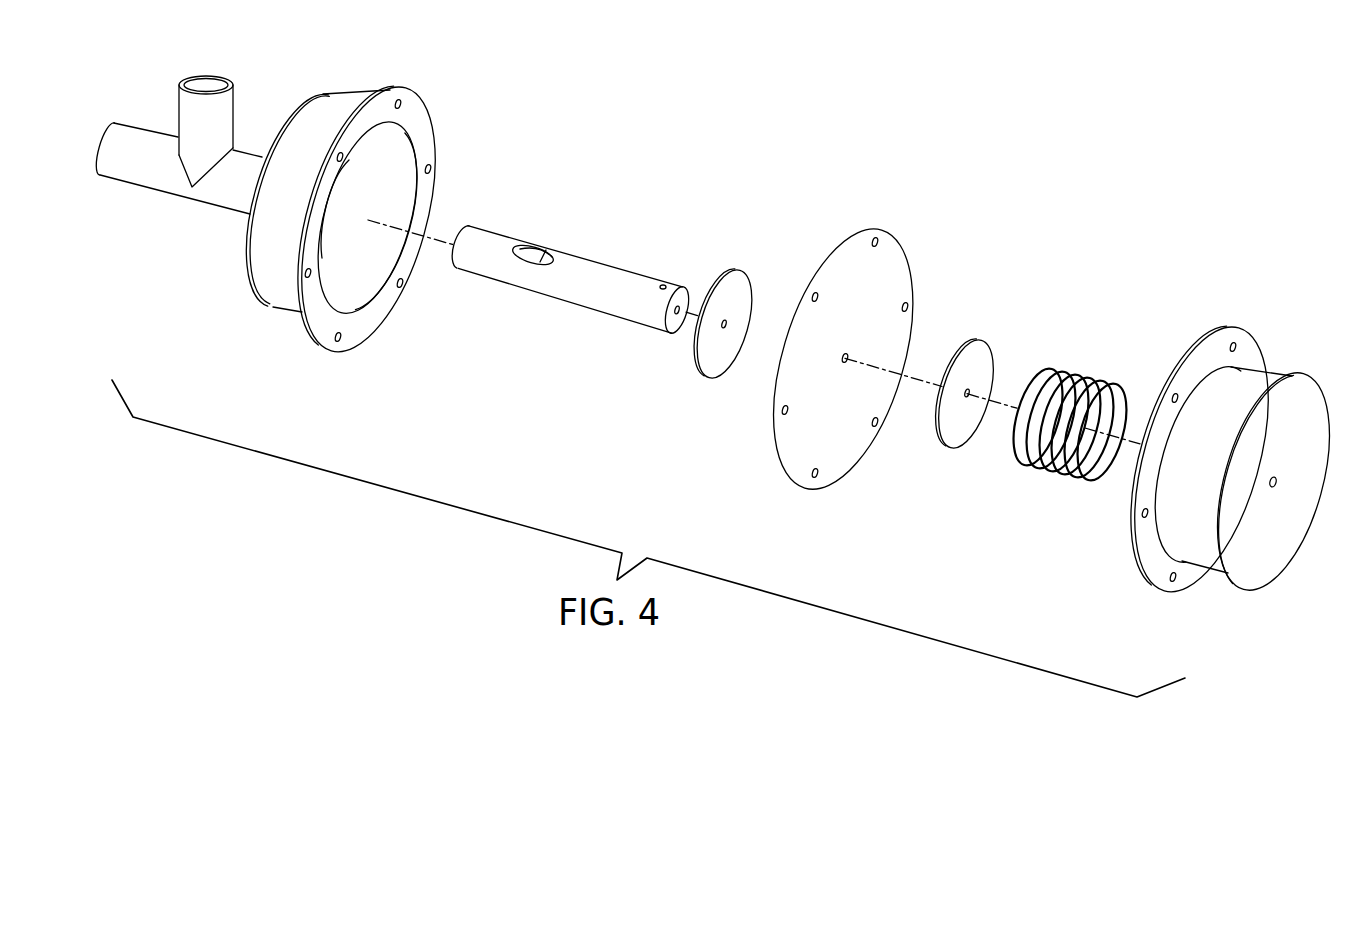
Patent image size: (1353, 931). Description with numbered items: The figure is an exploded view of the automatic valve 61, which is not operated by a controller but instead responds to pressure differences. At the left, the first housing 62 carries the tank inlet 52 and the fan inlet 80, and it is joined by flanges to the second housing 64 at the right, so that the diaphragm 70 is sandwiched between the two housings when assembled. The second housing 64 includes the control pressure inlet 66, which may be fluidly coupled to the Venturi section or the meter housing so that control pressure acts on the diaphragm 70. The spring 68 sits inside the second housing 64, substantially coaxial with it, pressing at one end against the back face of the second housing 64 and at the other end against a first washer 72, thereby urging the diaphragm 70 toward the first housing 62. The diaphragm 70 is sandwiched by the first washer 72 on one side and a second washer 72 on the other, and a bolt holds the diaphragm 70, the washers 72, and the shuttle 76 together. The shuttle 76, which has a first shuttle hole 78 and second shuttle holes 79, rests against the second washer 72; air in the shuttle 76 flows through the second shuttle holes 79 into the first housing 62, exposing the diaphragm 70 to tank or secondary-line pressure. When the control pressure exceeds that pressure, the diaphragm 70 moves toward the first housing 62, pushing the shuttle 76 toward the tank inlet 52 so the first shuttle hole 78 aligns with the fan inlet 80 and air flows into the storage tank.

The tank inlet 52 is at (142, 170).
The valve 61 is at (624, 120).
The first housing 62 is at (327, 130).
The second housing 64 is at (1227, 395).
The control pressure inlet 66 is at (1280, 548).
The spring 68 is at (1075, 380).
The diaphragm 70 is at (880, 263).
The washers 72 is at (717, 353).
The shuttle 76 is at (618, 293).
The first shuttle hole 78 is at (525, 258).
The second shuttle holes 79 is at (665, 283).
The fan inlet 80 is at (215, 120).